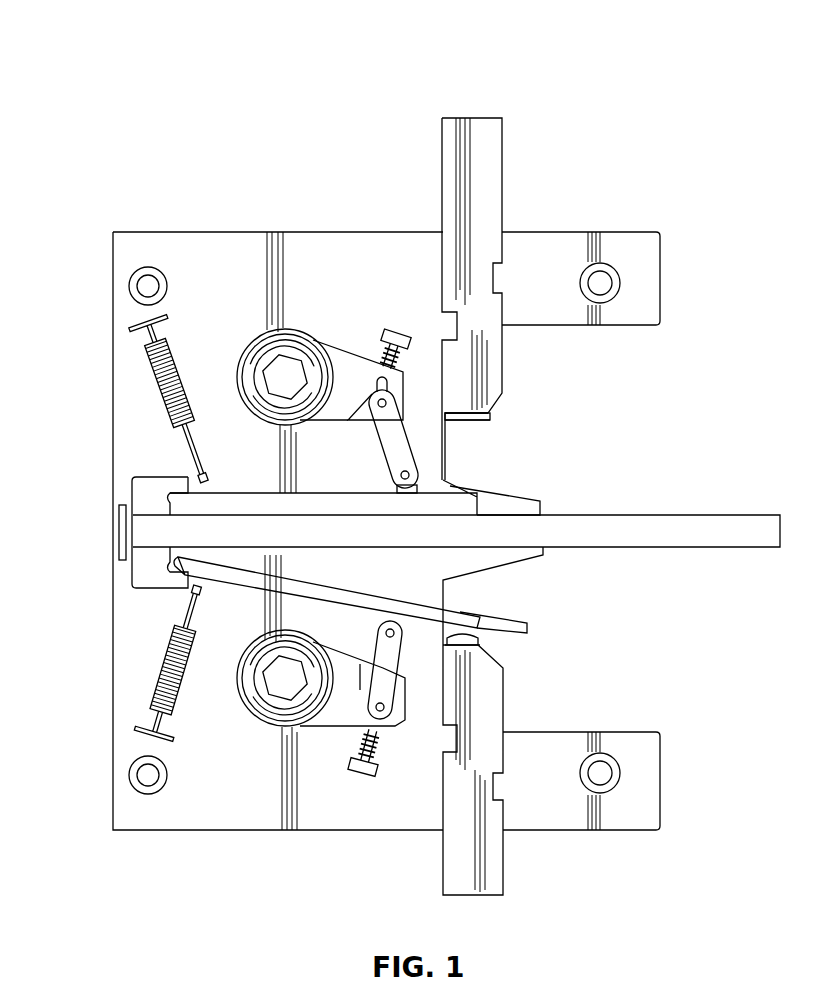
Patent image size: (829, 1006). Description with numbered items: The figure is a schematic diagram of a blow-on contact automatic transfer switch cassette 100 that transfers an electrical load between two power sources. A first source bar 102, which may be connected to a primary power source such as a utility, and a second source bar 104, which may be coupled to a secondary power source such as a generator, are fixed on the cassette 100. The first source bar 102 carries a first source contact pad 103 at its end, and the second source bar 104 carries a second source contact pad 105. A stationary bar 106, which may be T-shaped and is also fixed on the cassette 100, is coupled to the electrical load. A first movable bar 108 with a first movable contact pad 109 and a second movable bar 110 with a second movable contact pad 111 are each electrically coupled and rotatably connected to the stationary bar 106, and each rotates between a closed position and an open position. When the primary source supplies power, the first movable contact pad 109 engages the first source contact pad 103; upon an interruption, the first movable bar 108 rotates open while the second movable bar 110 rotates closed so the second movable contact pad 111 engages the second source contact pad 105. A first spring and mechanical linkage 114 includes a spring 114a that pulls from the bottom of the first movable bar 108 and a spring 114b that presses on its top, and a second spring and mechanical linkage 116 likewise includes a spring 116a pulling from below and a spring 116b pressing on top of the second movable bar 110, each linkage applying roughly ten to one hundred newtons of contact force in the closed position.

The blow-on contact automatic transfer switch cassette 100 is at (685, 50).
The first source bar 102 is at (503, 160).
The first source contact pad 103 is at (468, 418).
The second source bar 104 is at (503, 848).
The second source contact pad 105 is at (484, 644).
The stationary bar 106 is at (620, 512).
The first movable bar 108 is at (450, 505).
The first movable contact pad 109 is at (512, 498).
The second movable bar 110 is at (450, 614).
The second movable contact pad 111 is at (512, 626).
The first spring and mechanical linkage 114 is at (180, 342).
The spring 114a is at (130, 358).
The spring 114b is at (396, 330).
The second spring and mechanical linkage 116 is at (177, 720).
The spring 116a is at (132, 680).
The spring 116b is at (382, 765).